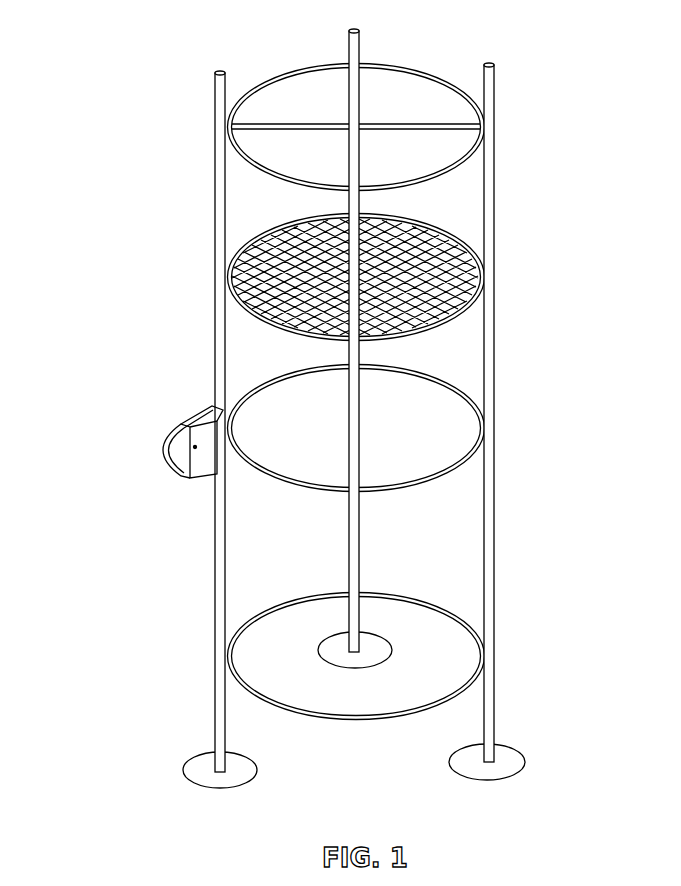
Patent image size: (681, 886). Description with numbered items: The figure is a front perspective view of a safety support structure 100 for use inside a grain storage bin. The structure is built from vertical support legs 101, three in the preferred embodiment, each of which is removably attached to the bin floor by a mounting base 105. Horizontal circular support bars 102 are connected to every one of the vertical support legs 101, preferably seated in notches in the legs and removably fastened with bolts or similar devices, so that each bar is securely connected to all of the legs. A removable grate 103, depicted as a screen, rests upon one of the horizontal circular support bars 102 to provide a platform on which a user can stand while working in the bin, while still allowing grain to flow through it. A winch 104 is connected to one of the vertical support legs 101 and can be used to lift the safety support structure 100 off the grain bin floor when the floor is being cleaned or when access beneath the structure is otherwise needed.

The safety support structure 100 is at (218, 126).
The vertical support legs 101 is at (355, 48).
The horizontal circular support bars 102 is at (285, 73).
The removable grate 103 is at (450, 280).
The winch 104 is at (178, 422).
The mounting bases 105 is at (373, 655).